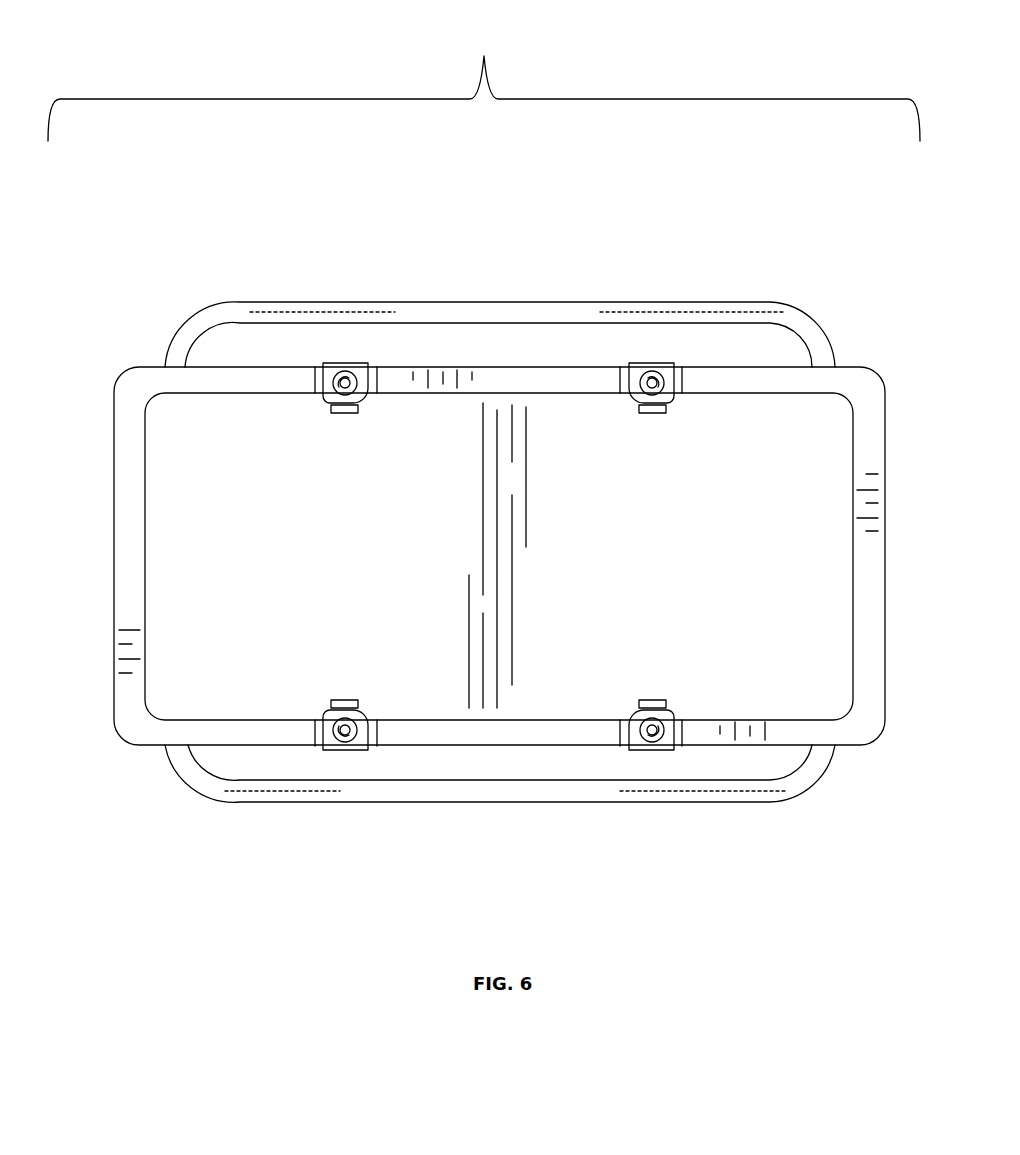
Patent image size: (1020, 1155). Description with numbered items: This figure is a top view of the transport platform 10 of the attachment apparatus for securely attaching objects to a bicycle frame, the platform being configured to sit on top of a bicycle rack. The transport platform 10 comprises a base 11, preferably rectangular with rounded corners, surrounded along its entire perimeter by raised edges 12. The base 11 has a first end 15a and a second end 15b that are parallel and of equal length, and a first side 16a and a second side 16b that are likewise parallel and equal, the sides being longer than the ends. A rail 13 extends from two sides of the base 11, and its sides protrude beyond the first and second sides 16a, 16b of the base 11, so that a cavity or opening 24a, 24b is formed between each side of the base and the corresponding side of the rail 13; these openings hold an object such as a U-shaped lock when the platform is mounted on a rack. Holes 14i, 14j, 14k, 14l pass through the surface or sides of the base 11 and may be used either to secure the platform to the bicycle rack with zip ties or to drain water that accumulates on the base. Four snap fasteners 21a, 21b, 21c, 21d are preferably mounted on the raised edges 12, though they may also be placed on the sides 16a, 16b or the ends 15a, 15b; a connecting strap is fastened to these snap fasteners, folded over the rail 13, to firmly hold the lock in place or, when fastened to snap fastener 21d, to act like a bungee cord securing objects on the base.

The transport platform 10 is at (484, 77).
The base 11 is at (745, 517).
The raised edges 12 is at (541, 383).
The rail 13 is at (367, 310).
The hole 14i is at (330, 400).
The hole 14j is at (678, 385).
The hole 14k is at (350, 712).
The hole 14l is at (650, 723).
The first end 15a is at (113, 600).
The second end 15b is at (884, 583).
The first side 16a is at (253, 367).
The second side 16b is at (262, 745).
The snap fastener 21a is at (348, 363).
The snap fastener 21b is at (651, 365).
The snap fastener 21c is at (345, 733).
The snap fastener 21d is at (660, 745).
The cavity or opening 24a is at (472, 340).
The cavity or opening 24b is at (500, 762).